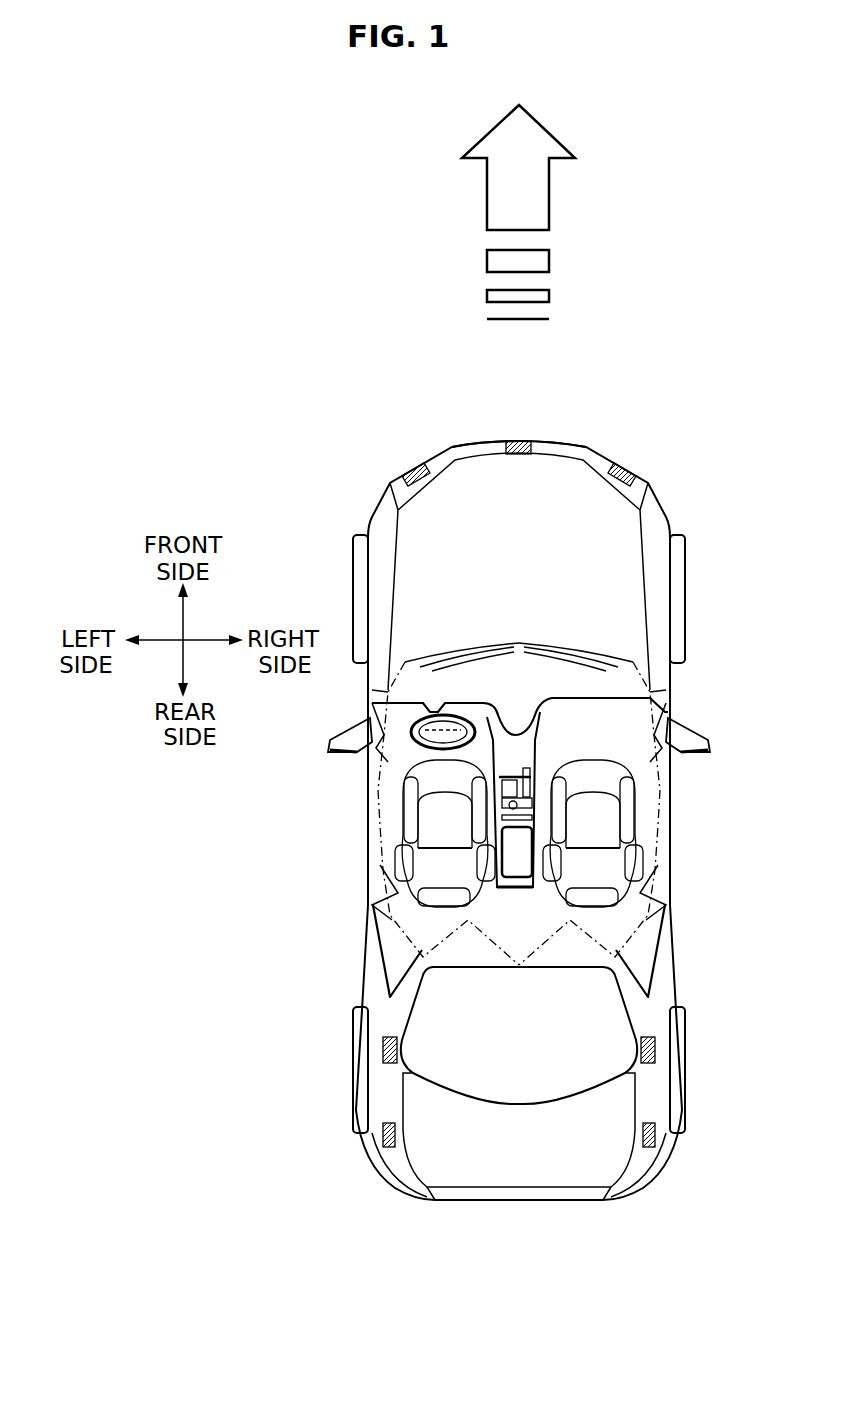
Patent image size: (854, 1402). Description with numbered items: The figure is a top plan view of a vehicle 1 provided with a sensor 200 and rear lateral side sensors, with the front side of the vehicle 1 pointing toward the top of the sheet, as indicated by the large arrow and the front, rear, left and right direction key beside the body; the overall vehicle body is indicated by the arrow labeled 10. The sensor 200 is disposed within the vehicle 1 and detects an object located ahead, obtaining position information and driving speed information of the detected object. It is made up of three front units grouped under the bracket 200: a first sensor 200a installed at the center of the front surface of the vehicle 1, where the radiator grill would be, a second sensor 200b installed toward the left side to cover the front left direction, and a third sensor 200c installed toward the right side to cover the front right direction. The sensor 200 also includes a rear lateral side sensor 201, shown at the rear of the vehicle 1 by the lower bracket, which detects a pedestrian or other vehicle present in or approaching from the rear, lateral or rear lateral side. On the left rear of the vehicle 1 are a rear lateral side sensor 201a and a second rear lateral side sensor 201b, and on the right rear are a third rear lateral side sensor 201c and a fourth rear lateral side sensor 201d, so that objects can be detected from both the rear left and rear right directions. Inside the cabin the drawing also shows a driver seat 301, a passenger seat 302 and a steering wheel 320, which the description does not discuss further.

The vehicle 1 is at (330, 300).
The vehicle 10 is at (367, 461).
The sensor 200 is at (627, 388).
The first sensor 200a is at (515, 440).
The second sensor 200b is at (413, 468).
The third sensor 200c is at (628, 467).
The rear lateral side sensor 201 is at (322, 1260).
The rear lateral side sensor 201a is at (385, 1042).
The second rear lateral side sensor 201b is at (390, 1148).
The third rear lateral side sensor 201c is at (653, 1042).
The fourth rear lateral side sensor 201d is at (648, 1148).
The driver seat 301 is at (403, 860).
The passenger seat 302 is at (630, 860).
The steering wheel 320 is at (413, 752).